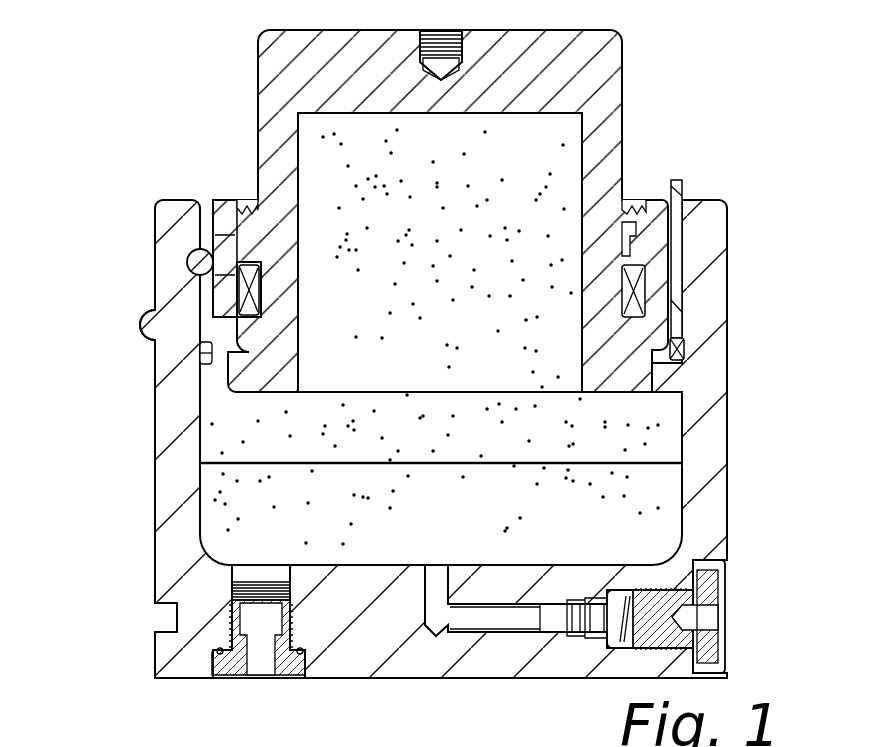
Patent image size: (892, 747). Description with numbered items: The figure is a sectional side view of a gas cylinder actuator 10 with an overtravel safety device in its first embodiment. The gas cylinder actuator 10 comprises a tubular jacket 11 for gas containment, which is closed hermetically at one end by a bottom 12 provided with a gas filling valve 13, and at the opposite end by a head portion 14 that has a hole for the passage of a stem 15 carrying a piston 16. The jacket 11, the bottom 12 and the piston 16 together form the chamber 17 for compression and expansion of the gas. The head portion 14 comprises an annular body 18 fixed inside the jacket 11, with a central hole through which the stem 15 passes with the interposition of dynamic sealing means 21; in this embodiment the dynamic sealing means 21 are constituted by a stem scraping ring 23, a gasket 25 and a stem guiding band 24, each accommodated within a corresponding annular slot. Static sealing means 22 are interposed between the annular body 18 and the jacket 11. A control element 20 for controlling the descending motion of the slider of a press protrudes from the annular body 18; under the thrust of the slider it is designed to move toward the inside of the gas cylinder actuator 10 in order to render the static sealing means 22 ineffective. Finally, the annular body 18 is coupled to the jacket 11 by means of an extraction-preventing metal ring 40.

The gas cylinder actuator 10 is at (745, 136).
The tubular jacket 11 is at (178, 463).
The bottom 12 is at (363, 640).
The gas filling valve 13 is at (612, 628).
The head portion 14 is at (123, 373).
The stem 15 is at (612, 163).
The piston 16 is at (613, 372).
The chamber 17 is at (458, 524).
The annular body 18 is at (222, 199).
The control element 20 is at (676, 187).
The dynamic sealing means 21 is at (642, 282).
The static sealing means 22 is at (682, 343).
The stem scraping ring 23 is at (257, 198).
The stem guiding band 24 is at (243, 272).
The gasket 25 is at (240, 290).
The extraction-preventing metal ring 40 is at (189, 250).